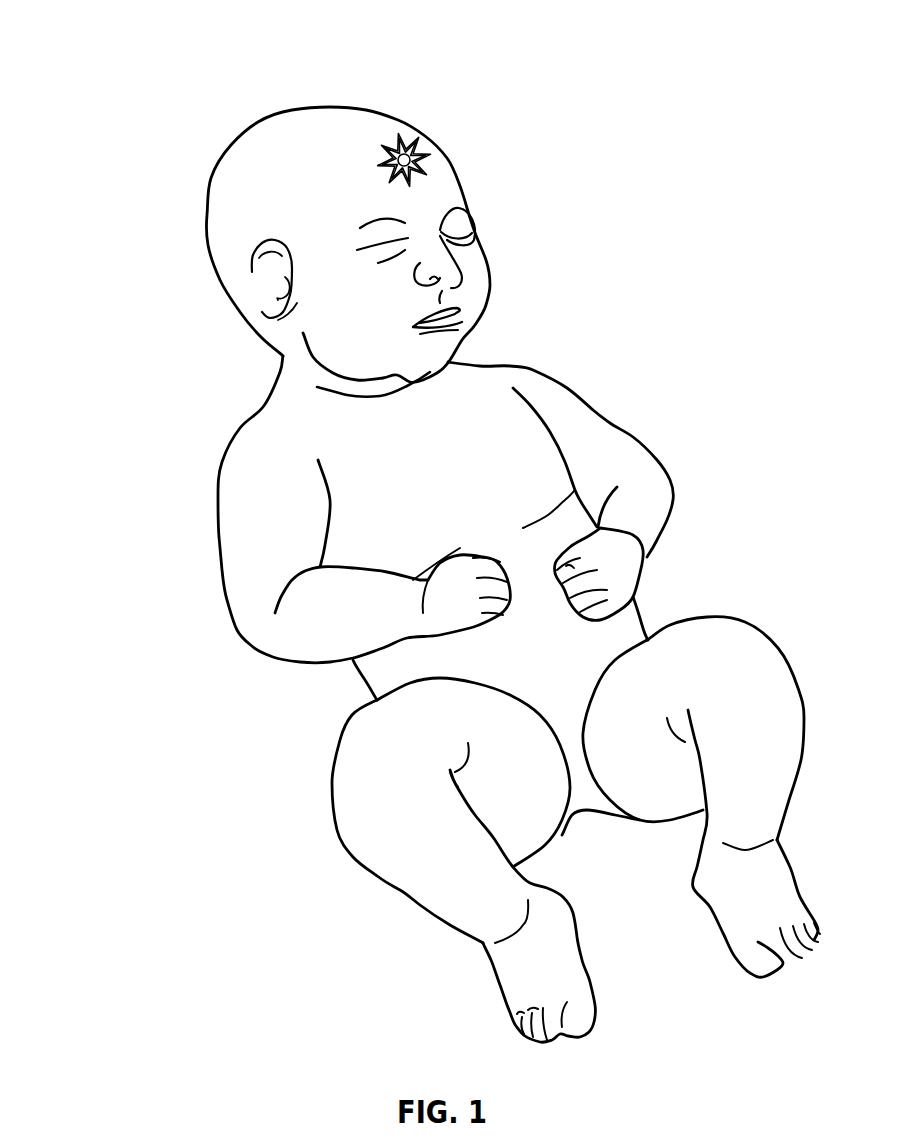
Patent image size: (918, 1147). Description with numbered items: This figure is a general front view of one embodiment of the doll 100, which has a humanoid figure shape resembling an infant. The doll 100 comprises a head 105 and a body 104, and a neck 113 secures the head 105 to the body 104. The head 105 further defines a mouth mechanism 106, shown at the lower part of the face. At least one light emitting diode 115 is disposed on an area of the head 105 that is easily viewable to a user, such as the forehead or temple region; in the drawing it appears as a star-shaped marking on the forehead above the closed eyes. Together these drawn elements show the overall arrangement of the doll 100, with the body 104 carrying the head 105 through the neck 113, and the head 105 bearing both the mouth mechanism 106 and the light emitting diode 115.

The doll 100 is at (128, 39).
The body 104 is at (353, 663).
The head 105 is at (207, 241).
The mouth mechanism 106 is at (463, 310).
The neck 113 is at (283, 353).
The light emitting diode (LED) 115 is at (408, 140).